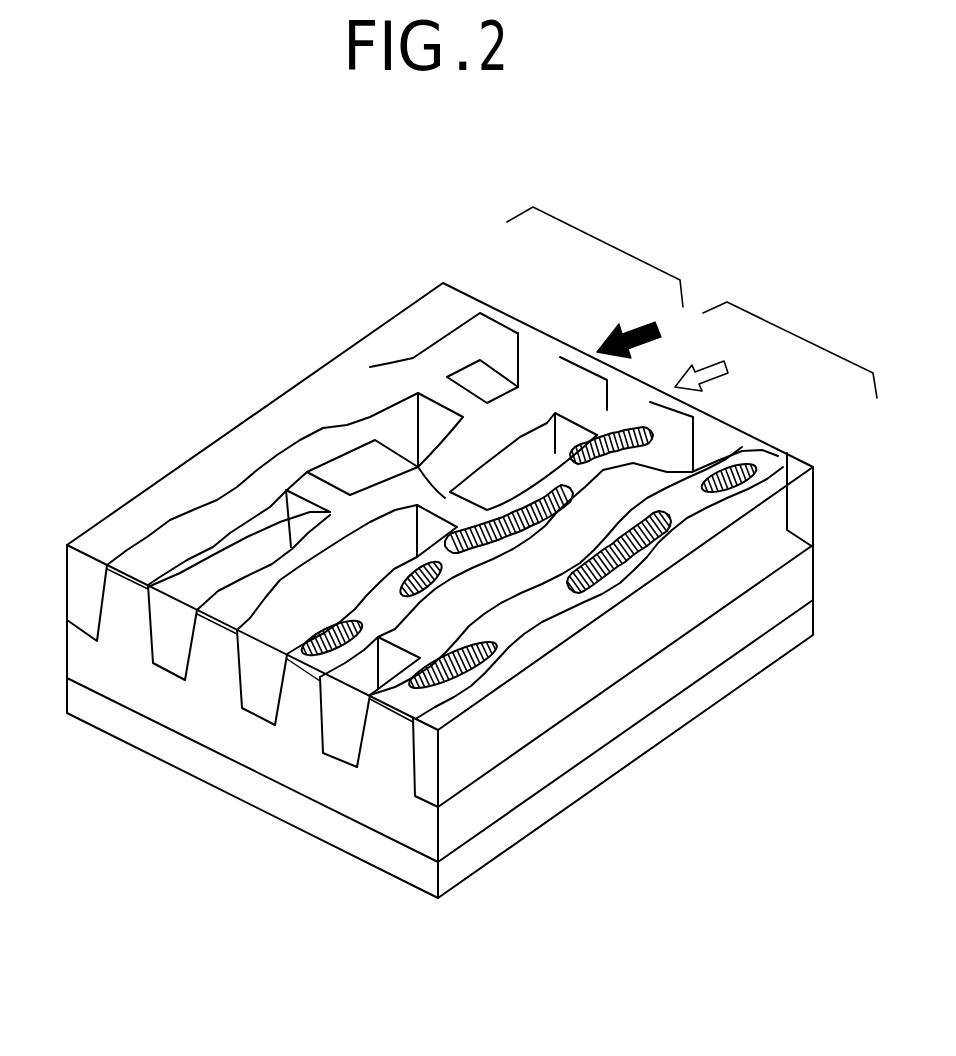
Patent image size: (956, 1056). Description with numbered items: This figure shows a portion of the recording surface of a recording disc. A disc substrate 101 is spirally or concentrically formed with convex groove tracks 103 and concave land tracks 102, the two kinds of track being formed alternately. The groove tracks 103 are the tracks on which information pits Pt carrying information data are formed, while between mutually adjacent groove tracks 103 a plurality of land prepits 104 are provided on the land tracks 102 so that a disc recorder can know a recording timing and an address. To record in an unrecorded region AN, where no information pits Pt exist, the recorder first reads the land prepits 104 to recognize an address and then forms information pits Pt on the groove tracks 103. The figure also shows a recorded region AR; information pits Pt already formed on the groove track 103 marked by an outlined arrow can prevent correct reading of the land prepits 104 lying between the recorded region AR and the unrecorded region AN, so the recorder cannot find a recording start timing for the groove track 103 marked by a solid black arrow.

The disc substrate 101 is at (197, 763).
The land track 102 is at (87, 600).
The groove track 103 is at (565, 375).
The land prepit (LPP) 104 is at (407, 640).
The information pit Pt is at (507, 535).
The unrecorded region AN is at (595, 280).
The recorded region AR is at (776, 349).